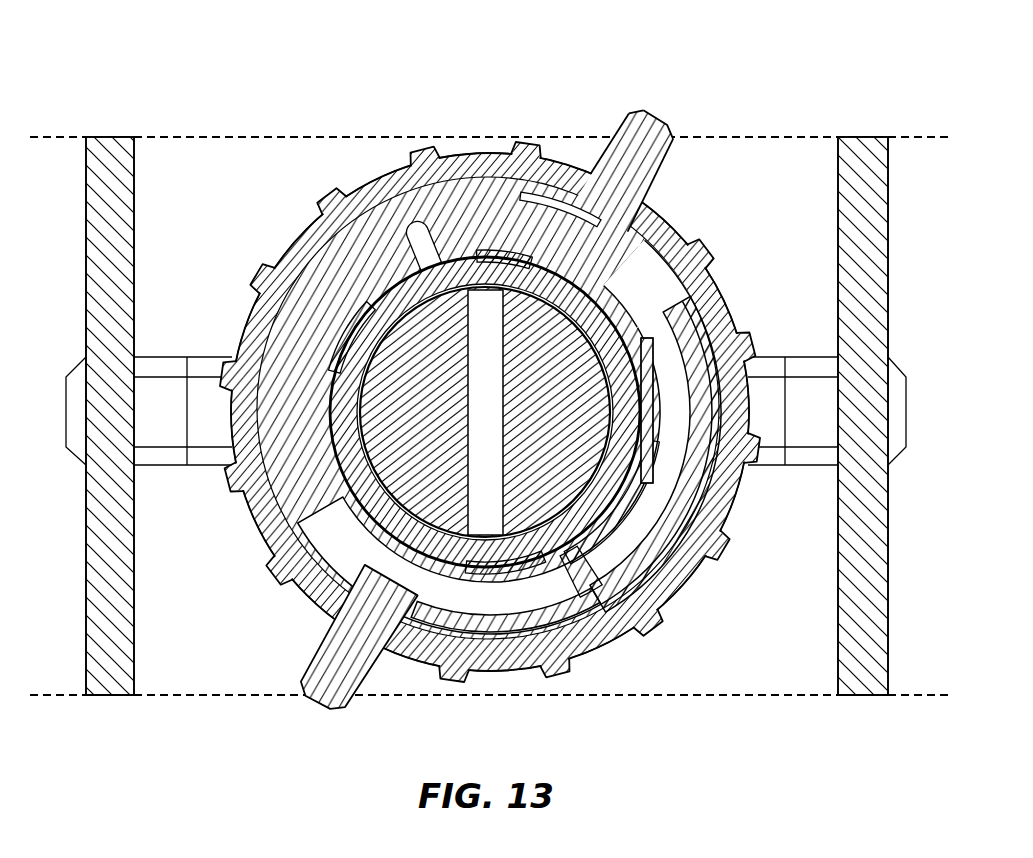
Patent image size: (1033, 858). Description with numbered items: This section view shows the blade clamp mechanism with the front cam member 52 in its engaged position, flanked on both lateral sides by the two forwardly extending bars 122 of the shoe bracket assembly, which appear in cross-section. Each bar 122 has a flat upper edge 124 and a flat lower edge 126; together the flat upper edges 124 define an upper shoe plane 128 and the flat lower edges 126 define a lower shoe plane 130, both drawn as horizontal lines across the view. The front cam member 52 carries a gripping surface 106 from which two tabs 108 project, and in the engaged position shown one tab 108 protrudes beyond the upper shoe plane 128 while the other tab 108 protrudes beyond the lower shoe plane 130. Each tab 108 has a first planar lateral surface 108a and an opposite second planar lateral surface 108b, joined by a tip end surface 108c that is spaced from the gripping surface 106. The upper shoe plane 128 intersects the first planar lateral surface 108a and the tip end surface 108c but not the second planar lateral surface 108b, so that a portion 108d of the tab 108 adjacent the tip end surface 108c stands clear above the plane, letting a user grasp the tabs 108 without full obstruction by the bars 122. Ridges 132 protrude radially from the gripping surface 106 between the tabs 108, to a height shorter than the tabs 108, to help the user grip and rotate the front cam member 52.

The front cam member 52 is at (308, 246).
The gripping surface 106 is at (376, 170).
The tab 108 is at (537, 385).
The first planar lateral surface 108a is at (613, 132).
The second planar lateral surface 108b is at (660, 181).
The tip end surface 108c is at (662, 120).
The portion of the tab 108d is at (636, 108).
The bar 122 is at (113, 548).
The flat upper edge 124 is at (113, 136).
The flat lower edge 126 is at (107, 698).
The upper shoe plane 128 is at (800, 133).
The lower shoe plane 130 is at (735, 698).
The ridge 132 is at (527, 140).